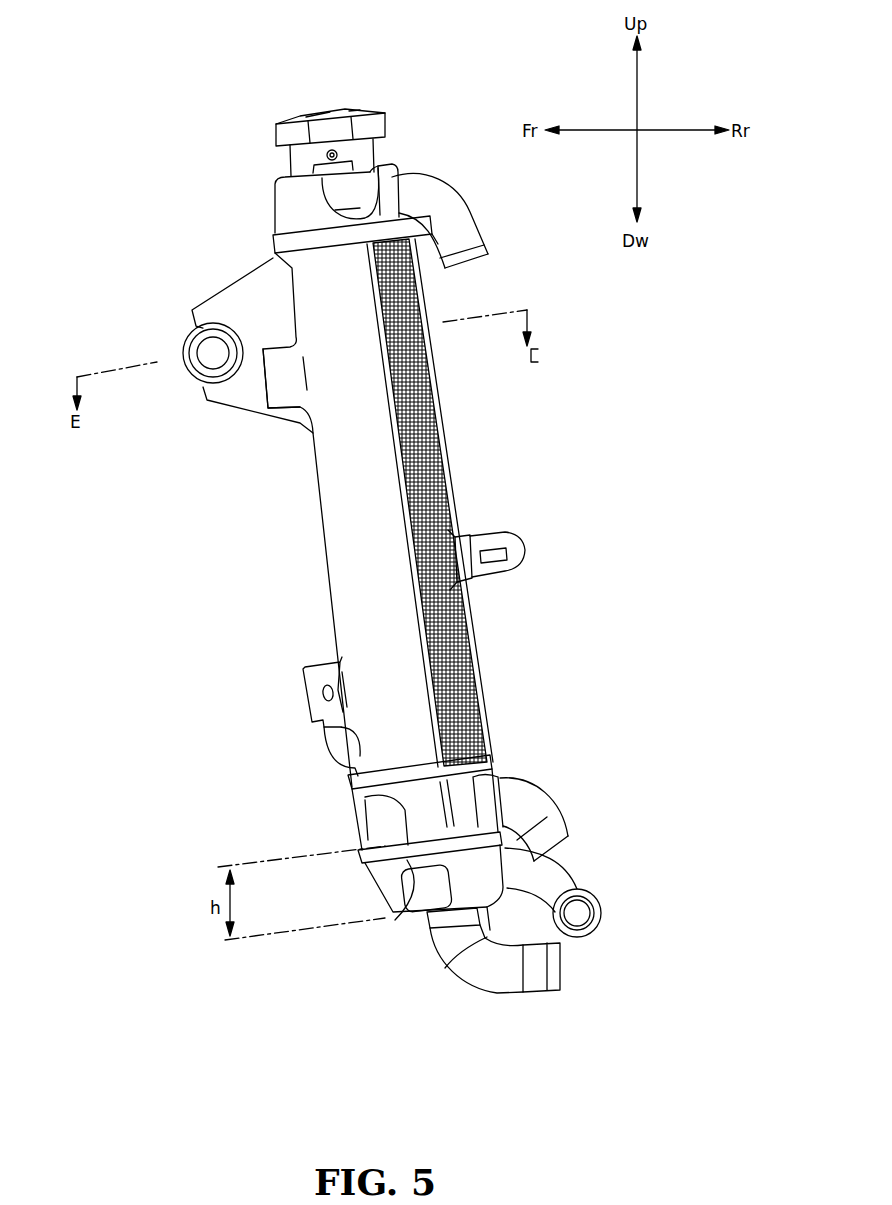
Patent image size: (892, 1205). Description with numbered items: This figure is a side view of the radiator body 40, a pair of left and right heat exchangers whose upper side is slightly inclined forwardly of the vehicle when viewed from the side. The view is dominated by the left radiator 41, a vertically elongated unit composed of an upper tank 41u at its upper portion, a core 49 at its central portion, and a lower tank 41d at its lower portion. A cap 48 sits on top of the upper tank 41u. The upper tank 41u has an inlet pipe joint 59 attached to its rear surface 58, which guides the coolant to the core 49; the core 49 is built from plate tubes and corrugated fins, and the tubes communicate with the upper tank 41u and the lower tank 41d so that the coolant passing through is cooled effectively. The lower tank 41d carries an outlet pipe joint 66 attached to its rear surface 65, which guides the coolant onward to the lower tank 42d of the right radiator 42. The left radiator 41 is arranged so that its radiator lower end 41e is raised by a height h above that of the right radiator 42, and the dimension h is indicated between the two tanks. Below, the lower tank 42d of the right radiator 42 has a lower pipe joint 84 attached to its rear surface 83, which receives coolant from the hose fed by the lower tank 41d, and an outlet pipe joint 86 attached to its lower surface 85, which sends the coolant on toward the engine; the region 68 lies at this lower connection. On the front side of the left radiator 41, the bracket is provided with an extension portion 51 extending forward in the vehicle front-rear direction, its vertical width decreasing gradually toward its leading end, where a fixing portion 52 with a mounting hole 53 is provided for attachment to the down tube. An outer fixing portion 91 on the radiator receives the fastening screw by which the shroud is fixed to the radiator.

The radiator body 40 is at (200, 152).
The radiator cap 48 is at (370, 111).
The rear surface 58 is at (387, 168).
The inlet pipe joint 59 is at (475, 205).
The upper tank 41u is at (290, 206).
The left radiator 41 is at (266, 243).
The core 49 is at (432, 434).
The mounting hole 53 is at (207, 354).
The fixing portion 52 is at (200, 378).
The extension portion 51 is at (290, 802).
The outer fixing portion 91 is at (308, 712).
The rear surface 65 is at (462, 813).
The outlet pipe joint 66 is at (530, 805).
The rear surface 83 is at (505, 873).
The lower pipe joint 84 is at (572, 890).
The lower connecting part 68 is at (508, 906).
The lower tank 41d is at (370, 832).
The lower tank 42d is at (380, 887).
The radiator lower end 41e is at (392, 915).
The right radiator 42 is at (413, 918).
The lower surface 85 is at (455, 960).
The outlet pipe joint 86 is at (512, 978).